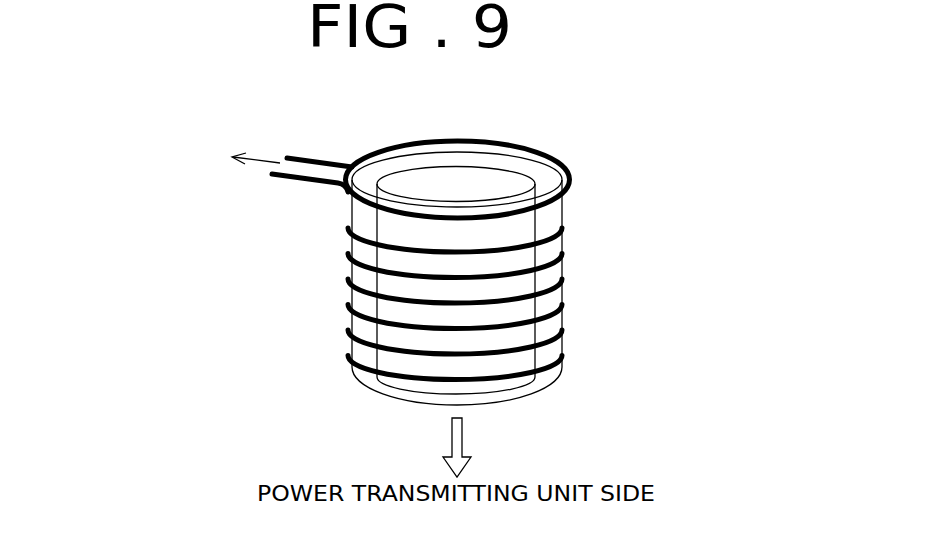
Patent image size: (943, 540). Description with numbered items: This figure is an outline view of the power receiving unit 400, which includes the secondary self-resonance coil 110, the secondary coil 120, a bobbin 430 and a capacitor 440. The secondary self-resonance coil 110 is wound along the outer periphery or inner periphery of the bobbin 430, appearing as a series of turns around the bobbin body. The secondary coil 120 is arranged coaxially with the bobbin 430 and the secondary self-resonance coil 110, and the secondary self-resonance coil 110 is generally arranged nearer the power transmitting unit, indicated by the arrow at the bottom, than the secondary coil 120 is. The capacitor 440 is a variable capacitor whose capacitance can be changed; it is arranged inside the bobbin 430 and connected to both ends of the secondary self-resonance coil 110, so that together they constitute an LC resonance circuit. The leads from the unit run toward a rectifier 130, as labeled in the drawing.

The power receiving unit 400 is at (607, 122).
The secondary self-resonance coil 110 is at (563, 352).
The secondary coil 120 is at (573, 182).
The rectifier 130 is at (176, 142).
The bobbin 430 is at (362, 372).
The capacitor 440 is at (456, 182).